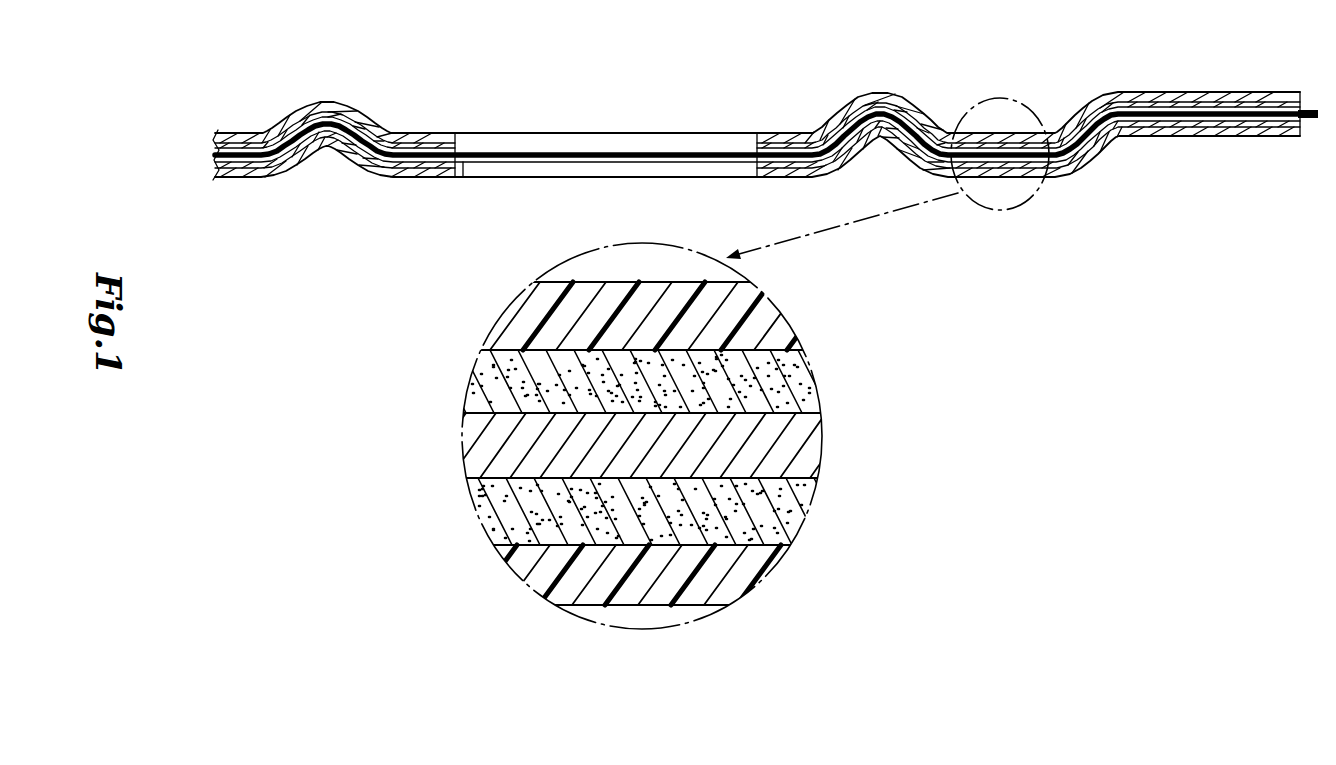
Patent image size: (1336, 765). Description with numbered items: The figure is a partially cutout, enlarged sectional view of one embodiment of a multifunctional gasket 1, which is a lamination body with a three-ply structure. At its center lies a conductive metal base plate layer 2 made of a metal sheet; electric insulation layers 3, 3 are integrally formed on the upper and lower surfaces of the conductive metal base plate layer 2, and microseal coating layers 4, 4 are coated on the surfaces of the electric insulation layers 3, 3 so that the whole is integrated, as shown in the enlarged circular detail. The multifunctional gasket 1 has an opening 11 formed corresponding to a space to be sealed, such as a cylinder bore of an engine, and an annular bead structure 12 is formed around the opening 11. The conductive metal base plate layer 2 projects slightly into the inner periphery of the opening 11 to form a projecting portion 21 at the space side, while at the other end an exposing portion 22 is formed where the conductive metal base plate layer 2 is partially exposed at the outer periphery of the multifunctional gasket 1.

The multifunctional gasket 1 is at (787, 110).
The conductive metal base plate layer 2 is at (1153, 134).
The electric insulation layer 3 is at (790, 382).
The microseal coating layer 4 is at (758, 316).
The opening 11 is at (677, 142).
The annular bead structure 12 is at (328, 102).
The projecting portion 21 is at (463, 167).
The exposing portion 22 is at (1313, 121).